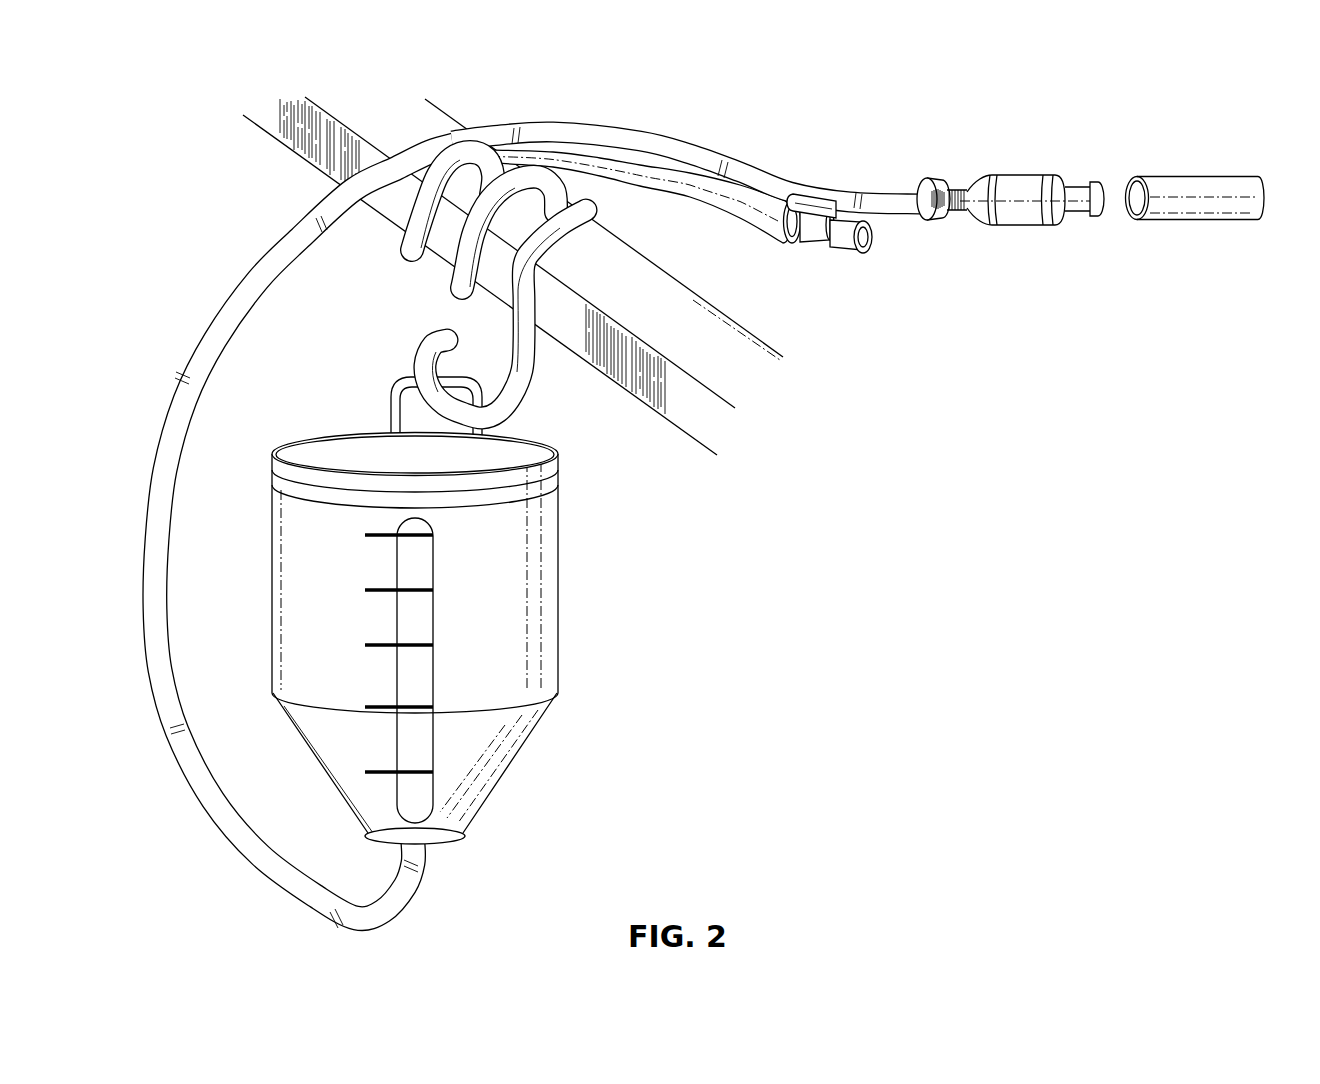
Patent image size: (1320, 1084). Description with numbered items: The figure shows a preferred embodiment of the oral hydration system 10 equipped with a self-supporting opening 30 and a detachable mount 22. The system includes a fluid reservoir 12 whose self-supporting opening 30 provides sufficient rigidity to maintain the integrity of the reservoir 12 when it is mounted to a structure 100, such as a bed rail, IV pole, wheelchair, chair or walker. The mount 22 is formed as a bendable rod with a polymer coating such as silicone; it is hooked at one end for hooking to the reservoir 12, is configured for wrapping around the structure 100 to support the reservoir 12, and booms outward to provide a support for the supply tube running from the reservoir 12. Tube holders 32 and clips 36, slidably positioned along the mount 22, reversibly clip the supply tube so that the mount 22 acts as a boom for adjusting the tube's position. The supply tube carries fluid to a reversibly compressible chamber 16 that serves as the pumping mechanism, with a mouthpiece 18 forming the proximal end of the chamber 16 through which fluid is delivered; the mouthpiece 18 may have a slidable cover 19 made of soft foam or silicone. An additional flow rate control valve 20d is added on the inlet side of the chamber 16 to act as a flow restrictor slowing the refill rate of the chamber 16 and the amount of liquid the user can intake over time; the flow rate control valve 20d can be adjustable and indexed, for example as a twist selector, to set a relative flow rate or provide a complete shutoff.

The oral hydration system 10 is at (832, 660).
The fluid reservoir 12 is at (557, 598).
The reversibly compressible chamber 16 is at (1044, 185).
The mouthpiece 18 is at (1080, 205).
The slidable cover 19 is at (1198, 177).
The flow rate control valve 20d is at (930, 222).
The mount 22 is at (730, 233).
The self-supporting opening 30 is at (560, 468).
The tube clip 32 is at (478, 142).
The clips 36 is at (812, 195).
The structure 100 is at (740, 356).